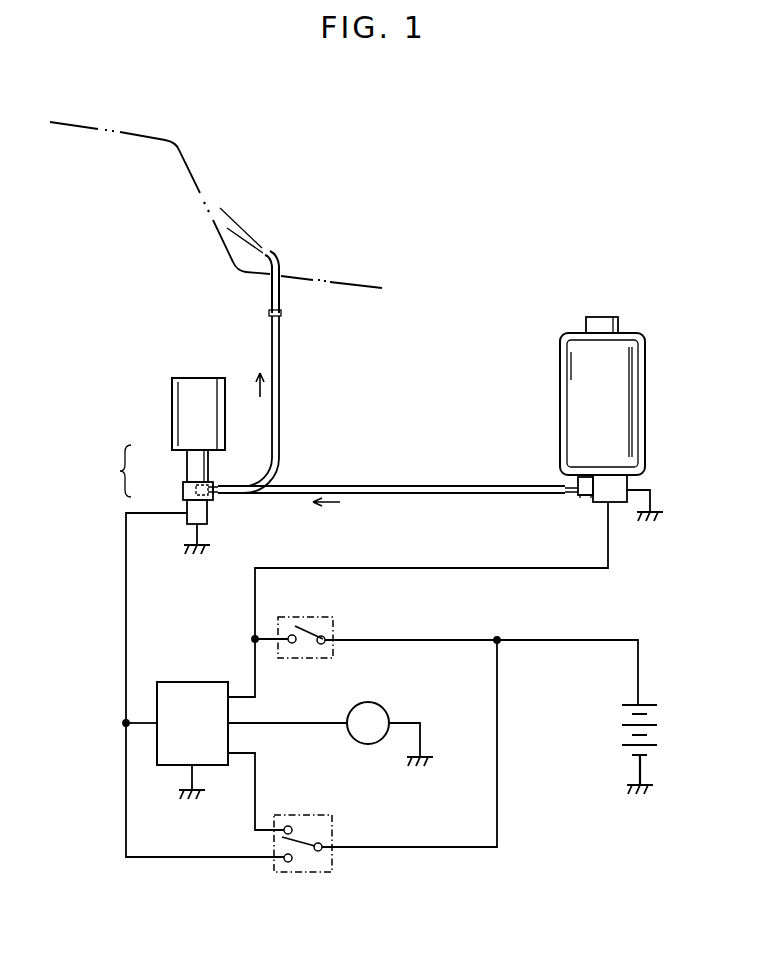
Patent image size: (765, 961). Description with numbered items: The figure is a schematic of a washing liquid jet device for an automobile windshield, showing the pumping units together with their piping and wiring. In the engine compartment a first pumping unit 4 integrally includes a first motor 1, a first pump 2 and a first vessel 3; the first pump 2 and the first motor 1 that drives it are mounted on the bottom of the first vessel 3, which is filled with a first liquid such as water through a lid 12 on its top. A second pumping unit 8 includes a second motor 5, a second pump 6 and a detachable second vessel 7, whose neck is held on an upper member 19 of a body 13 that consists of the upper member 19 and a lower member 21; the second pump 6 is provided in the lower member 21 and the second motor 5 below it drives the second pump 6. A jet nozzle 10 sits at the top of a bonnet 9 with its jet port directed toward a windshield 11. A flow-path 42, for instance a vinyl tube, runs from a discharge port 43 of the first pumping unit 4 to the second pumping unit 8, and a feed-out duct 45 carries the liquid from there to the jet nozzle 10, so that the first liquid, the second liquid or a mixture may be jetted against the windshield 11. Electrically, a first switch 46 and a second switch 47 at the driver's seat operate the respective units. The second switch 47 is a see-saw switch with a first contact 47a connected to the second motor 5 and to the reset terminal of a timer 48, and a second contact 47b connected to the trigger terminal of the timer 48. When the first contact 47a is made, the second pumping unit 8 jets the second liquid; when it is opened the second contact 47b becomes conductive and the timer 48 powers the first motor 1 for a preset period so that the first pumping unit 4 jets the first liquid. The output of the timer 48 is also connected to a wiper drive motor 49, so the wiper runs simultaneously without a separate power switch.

The first motor 1 is at (620, 503).
The first pump 2 is at (587, 498).
The first vessel 3 is at (646, 397).
The first pumping unit 4 is at (667, 479).
The second motor 5 is at (208, 512).
The second pump 6 is at (210, 481).
The second vessel 7 is at (172, 410).
The second pumping unit 8 is at (212, 478).
The bonnet 9 is at (347, 283).
The jet nozzle 10 is at (267, 253).
The windshield 11 is at (190, 172).
The lid 12 is at (605, 316).
The body 13 is at (92, 483).
The upper member 19 is at (188, 472).
The lower member 21 is at (183, 493).
The flow-path 42 is at (437, 484).
The discharge port 43 is at (577, 482).
The feed-out duct 45 is at (281, 370).
The first switch 46 is at (337, 622).
The second switch 47 is at (334, 825).
The first contact 47a is at (292, 862).
The second contact 47b is at (290, 826).
The timer 48 is at (197, 681).
The wiper drive motor 49 is at (387, 705).